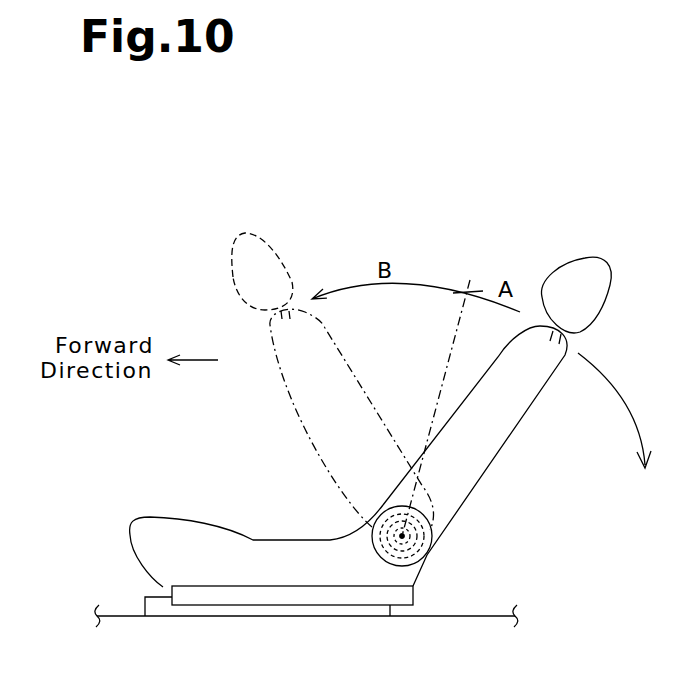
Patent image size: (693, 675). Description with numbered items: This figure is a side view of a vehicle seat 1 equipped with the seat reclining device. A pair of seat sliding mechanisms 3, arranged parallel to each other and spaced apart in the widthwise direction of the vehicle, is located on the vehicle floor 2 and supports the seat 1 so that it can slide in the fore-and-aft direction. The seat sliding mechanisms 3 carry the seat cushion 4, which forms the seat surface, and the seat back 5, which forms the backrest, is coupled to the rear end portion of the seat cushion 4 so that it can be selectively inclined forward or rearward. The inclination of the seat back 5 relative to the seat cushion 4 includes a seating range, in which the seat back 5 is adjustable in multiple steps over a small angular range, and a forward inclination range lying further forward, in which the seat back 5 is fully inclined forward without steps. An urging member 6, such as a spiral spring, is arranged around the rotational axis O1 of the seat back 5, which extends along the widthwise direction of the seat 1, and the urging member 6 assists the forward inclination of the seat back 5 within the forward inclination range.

The vehicle seat 1 is at (550, 208).
The vehicle floor 2 is at (498, 616).
The seat sliding mechanism 3 is at (130, 584).
The seat cushion 4 is at (186, 528).
The seat back 5 is at (490, 472).
The urging member 6 is at (430, 517).
The rotational axis O1 is at (393, 544).